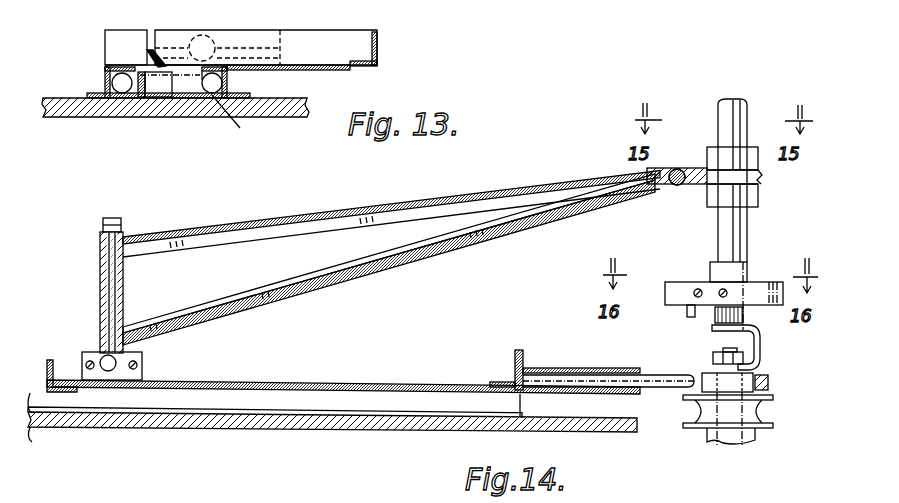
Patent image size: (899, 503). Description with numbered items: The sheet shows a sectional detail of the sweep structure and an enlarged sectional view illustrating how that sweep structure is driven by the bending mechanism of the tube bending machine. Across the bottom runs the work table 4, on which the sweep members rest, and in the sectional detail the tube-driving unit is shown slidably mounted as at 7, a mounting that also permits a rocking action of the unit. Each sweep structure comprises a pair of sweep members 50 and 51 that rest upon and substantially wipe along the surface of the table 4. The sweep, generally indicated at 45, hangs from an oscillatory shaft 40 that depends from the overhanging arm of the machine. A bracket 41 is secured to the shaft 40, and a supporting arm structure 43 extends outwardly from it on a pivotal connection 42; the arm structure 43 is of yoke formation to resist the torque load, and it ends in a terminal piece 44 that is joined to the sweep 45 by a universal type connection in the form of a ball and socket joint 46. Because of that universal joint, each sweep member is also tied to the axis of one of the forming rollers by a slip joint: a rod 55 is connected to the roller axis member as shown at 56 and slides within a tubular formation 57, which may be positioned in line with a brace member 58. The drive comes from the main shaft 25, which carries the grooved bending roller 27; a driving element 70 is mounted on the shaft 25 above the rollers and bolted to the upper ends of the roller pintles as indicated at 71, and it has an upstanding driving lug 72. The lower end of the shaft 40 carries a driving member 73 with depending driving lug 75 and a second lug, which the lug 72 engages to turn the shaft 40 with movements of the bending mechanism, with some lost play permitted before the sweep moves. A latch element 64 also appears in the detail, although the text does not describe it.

In FIG. 13, the work table 4 is at (88, 101).
In FIG. 14, the work table 4 is at (110, 416).
In FIG. 13, the slidable mounting 7 is at (231, 118).
In FIG. 14, the main shaft 25 is at (720, 443).
In FIG. 14, the bending roller 27 is at (773, 420).
In FIG. 14, the oscillatory shaft 40 is at (742, 102).
In FIG. 14, the bracket 41 is at (762, 180).
In FIG. 14, the pivotal connection 42 is at (676, 186).
In FIG. 14, the supporting arm structure 43 is at (412, 197).
In FIG. 14, the terminal piece 44 is at (100, 290).
In FIG. 14, the sweep 45 is at (53, 349).
In FIG. 14, the ball and socket joint 46 is at (142, 362).
In FIG. 13, the sweep member 50 is at (230, 86).
In FIG. 13, the sweep member 51 is at (105, 78).
In FIG. 14, the rod 55 is at (655, 378).
In FIG. 14, the rod connection to roller axis 56 is at (768, 382).
In FIG. 14, the tubular formation 57 is at (558, 368).
In FIG. 14, the brace member 58 is at (340, 382).
In FIG. 13, the latch member 64 is at (150, 90).
In FIG. 14, the driving element 70 is at (760, 346).
In FIG. 14, the bolted connection 71 is at (728, 352).
In FIG. 14, the driving lug 72 is at (744, 315).
In FIG. 14, the driving member 73 is at (765, 282).
In FIG. 14, the depending driving lug 75 is at (686, 314).